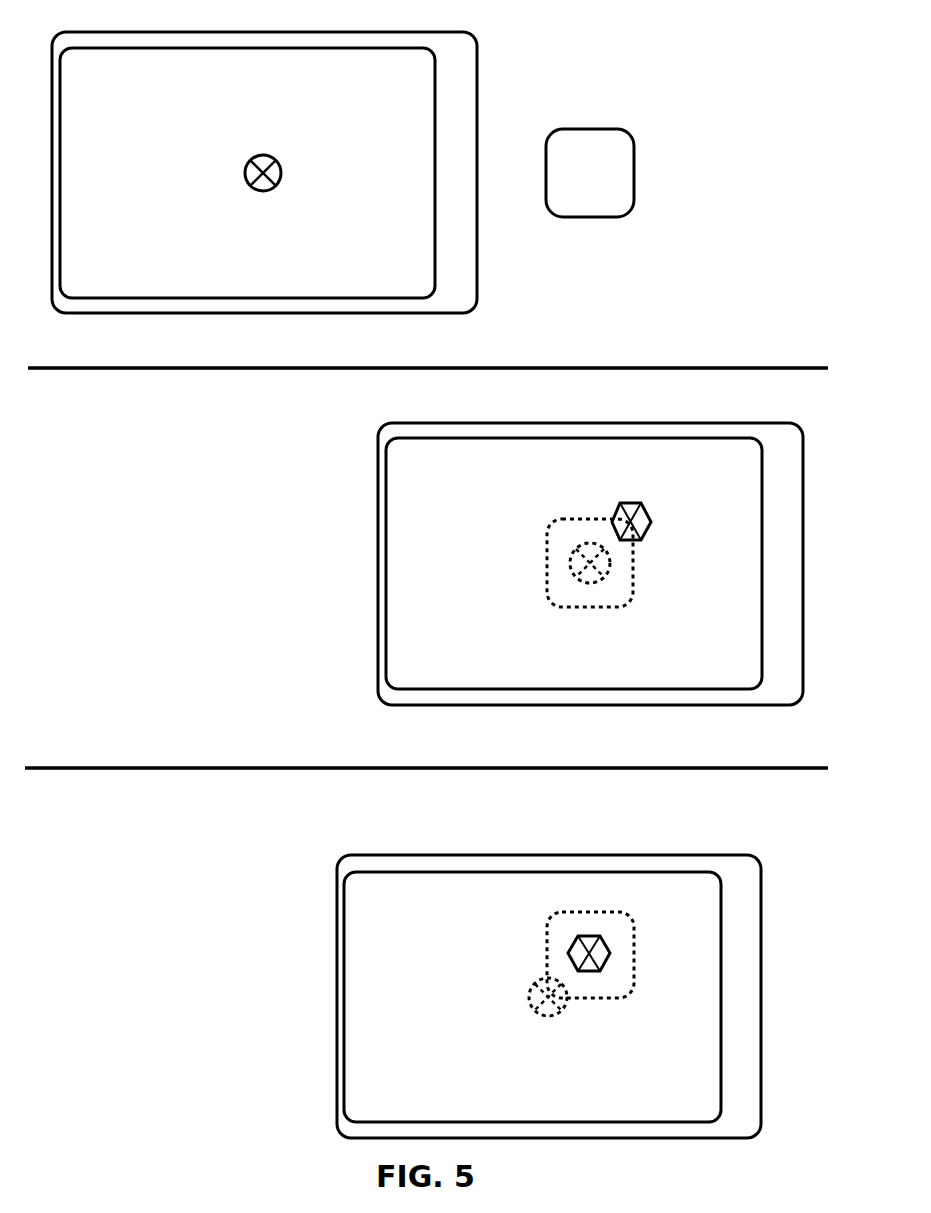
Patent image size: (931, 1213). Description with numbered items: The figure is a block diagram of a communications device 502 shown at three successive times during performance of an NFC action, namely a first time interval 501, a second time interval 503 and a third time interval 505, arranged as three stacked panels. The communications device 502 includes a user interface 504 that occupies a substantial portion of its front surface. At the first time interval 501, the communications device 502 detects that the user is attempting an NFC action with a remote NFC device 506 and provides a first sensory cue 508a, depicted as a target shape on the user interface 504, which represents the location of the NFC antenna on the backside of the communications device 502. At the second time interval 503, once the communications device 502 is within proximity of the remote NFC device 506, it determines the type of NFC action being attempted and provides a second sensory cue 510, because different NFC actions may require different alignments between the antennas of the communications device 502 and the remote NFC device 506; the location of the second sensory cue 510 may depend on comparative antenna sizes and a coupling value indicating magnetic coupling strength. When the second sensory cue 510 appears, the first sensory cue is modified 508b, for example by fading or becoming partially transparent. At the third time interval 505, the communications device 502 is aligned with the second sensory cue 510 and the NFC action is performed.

The first time interval 501 is at (736, 64).
The communications device 502 is at (478, 72).
The second time interval 503 is at (108, 446).
The user interface 504 is at (218, 48).
The third time interval 505 is at (133, 839).
The remote NFC device 506 is at (630, 210).
The first sensory cue 508a is at (283, 171).
The modified first sensory cue 508b is at (578, 552).
The second sensory cue 510 is at (648, 512).